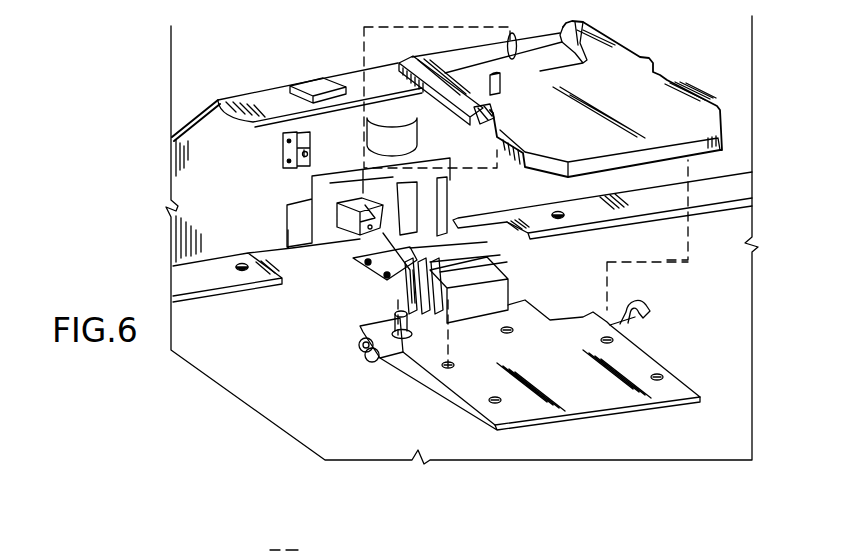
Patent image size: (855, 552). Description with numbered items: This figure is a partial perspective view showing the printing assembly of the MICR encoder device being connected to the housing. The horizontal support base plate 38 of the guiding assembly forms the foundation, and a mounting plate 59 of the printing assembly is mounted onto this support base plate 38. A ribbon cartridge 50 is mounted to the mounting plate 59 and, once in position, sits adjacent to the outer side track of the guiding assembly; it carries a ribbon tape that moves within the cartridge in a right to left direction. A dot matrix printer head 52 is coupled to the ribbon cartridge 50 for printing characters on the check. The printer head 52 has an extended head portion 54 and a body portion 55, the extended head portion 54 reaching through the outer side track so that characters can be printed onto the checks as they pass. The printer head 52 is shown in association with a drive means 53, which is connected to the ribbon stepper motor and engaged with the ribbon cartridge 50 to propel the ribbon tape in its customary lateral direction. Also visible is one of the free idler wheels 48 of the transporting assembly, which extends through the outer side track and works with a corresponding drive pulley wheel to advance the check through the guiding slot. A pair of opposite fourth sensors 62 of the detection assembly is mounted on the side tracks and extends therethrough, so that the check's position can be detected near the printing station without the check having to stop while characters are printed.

The horizontal support base plate 38 is at (735, 387).
The free idler wheel 48 is at (378, 130).
The ribbon cartridge 50 is at (625, 68).
The dot matrix printer head 52 is at (511, 277).
The drive means 53 is at (407, 336).
The extended head portion 54 is at (357, 259).
The body portion 55 is at (407, 268).
The mounting plate 59 is at (637, 362).
The fourth sensors 62 is at (282, 155).